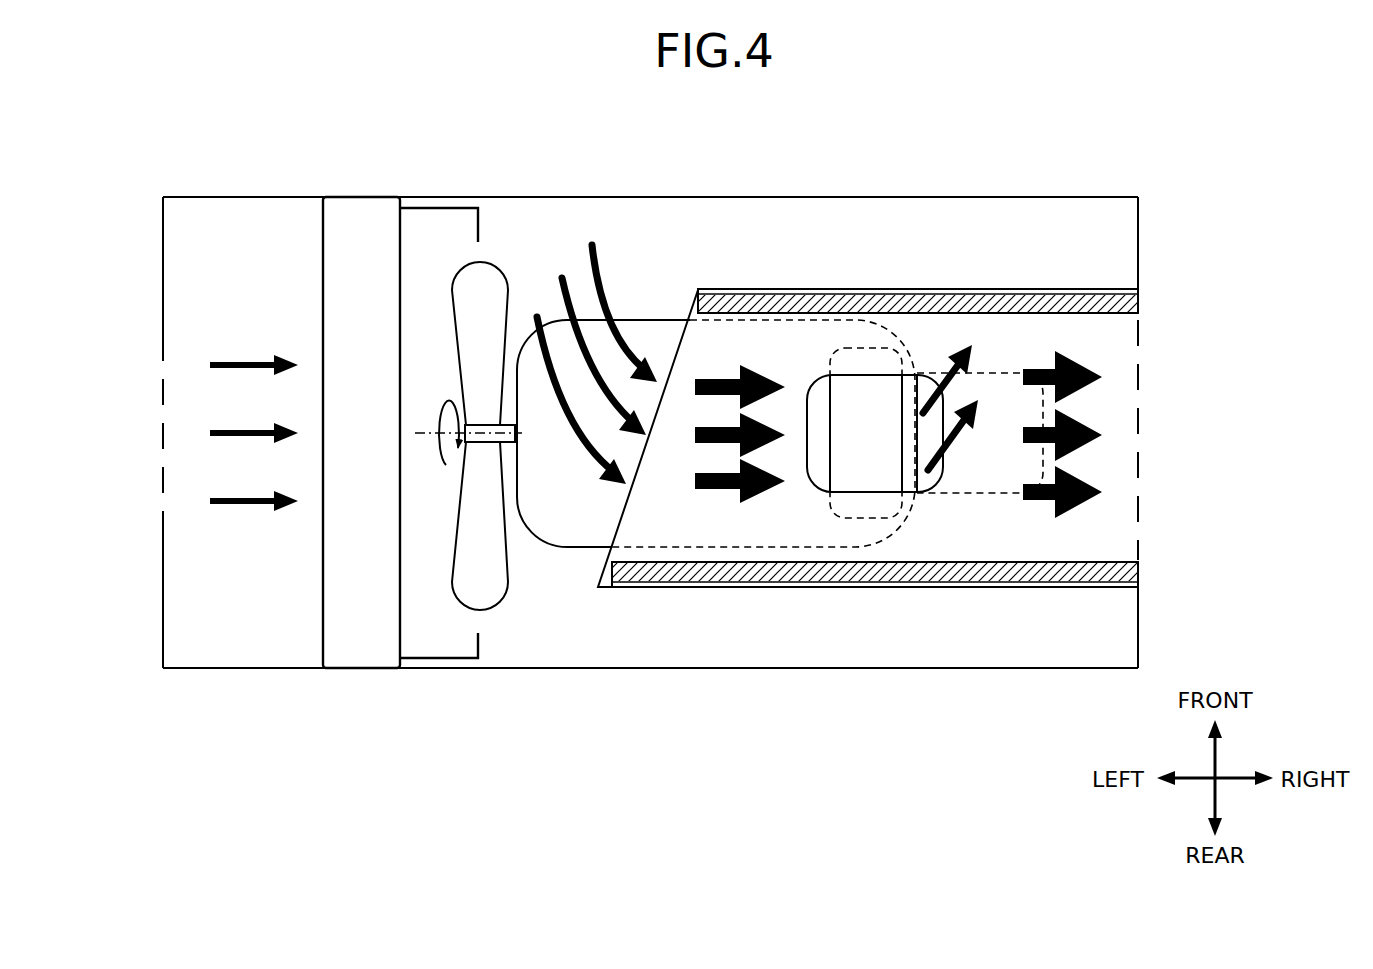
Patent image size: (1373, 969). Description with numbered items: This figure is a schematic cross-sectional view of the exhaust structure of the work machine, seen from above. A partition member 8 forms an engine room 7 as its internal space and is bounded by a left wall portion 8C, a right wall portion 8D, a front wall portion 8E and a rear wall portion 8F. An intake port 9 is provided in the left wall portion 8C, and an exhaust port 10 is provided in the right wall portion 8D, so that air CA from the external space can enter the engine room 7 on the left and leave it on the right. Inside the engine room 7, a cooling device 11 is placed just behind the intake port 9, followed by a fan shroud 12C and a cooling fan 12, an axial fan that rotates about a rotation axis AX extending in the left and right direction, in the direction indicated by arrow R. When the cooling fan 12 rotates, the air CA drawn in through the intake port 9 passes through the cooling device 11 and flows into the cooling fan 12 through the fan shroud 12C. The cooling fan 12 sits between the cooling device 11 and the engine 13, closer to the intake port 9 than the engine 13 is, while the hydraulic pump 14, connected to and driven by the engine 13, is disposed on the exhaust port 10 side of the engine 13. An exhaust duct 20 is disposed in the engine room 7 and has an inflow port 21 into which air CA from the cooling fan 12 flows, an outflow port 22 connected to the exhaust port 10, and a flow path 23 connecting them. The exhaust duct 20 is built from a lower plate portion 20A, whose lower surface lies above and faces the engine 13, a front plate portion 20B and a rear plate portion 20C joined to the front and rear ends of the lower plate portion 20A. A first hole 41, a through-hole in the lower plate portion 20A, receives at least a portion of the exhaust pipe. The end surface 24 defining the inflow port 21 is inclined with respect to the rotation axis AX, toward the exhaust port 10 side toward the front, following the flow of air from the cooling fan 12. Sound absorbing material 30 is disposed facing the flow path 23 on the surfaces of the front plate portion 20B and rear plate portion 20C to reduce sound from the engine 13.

The engine room 7 is at (1077, 634).
The partition member 8 is at (652, 434).
The left wall portion 8C is at (163, 605).
The right wall portion 8D is at (1140, 625).
The front wall portion 8E is at (251, 197).
The rear wall portion 8F is at (203, 670).
The intake port 9 is at (156, 389).
The exhaust port 10 is at (1144, 377).
The cooling device 11 is at (318, 640).
The cooling fan 12 is at (467, 504).
The fan shroud 12C is at (437, 660).
The engine 13 is at (572, 552).
The hydraulic pump 14 is at (975, 504).
The exhaust duct 20 is at (911, 434).
The lower plate portion 20A is at (1055, 332).
The front plate portion 20B is at (875, 434).
The rear plate portion 20C is at (927, 564).
The inflow port 21 is at (685, 312).
The outflow port 22 is at (1144, 314).
The flow path 23 is at (1010, 348).
The end surface 24 is at (678, 345).
The sound absorbing material 30 is at (793, 300).
The first hole 41 is at (857, 470).
The air CA is at (246, 364).
The rotation axis AX is at (428, 430).
The arrow R is at (446, 462).